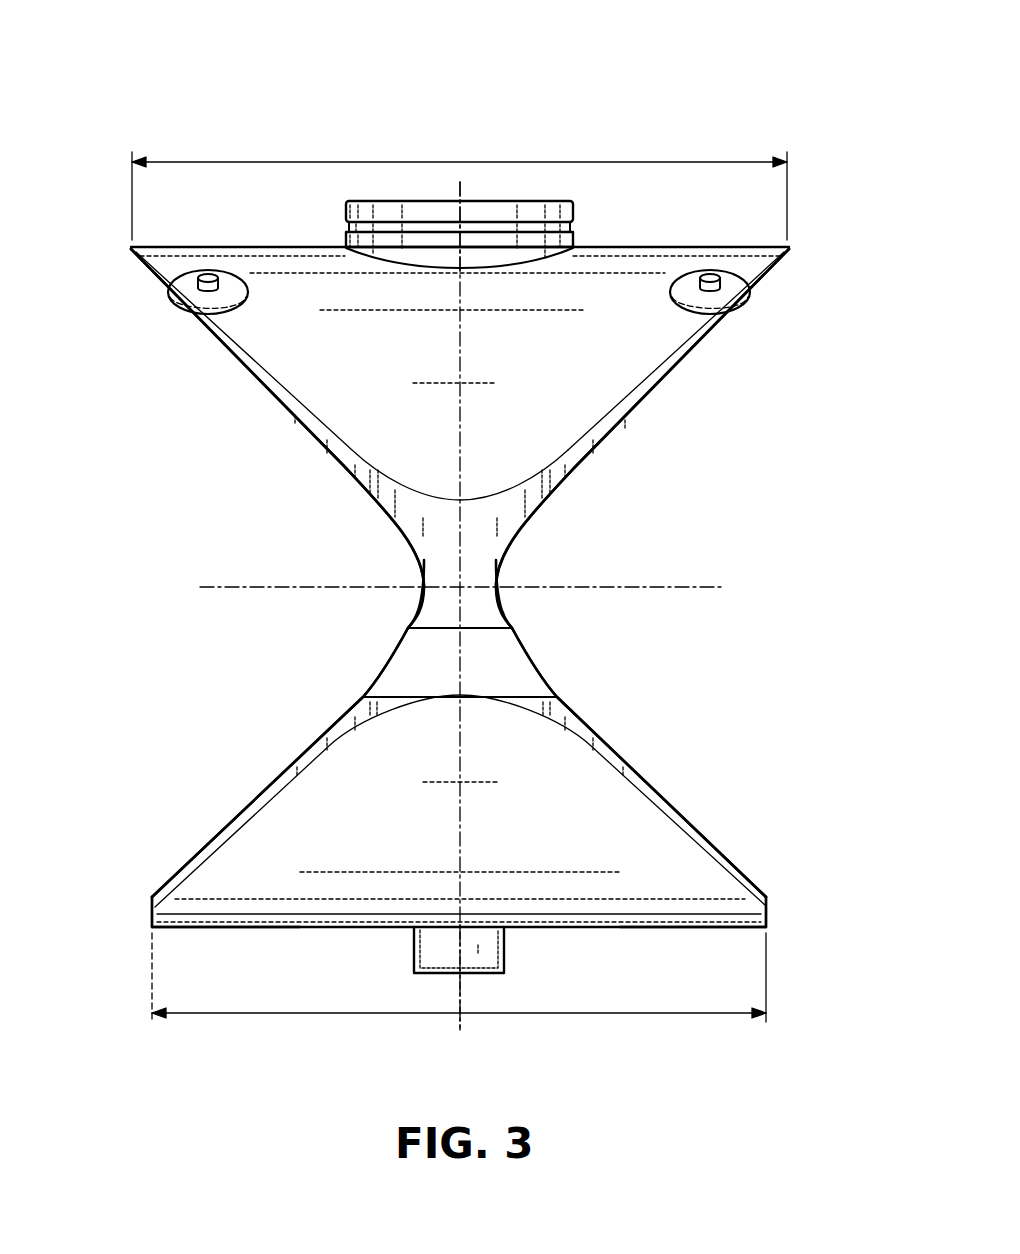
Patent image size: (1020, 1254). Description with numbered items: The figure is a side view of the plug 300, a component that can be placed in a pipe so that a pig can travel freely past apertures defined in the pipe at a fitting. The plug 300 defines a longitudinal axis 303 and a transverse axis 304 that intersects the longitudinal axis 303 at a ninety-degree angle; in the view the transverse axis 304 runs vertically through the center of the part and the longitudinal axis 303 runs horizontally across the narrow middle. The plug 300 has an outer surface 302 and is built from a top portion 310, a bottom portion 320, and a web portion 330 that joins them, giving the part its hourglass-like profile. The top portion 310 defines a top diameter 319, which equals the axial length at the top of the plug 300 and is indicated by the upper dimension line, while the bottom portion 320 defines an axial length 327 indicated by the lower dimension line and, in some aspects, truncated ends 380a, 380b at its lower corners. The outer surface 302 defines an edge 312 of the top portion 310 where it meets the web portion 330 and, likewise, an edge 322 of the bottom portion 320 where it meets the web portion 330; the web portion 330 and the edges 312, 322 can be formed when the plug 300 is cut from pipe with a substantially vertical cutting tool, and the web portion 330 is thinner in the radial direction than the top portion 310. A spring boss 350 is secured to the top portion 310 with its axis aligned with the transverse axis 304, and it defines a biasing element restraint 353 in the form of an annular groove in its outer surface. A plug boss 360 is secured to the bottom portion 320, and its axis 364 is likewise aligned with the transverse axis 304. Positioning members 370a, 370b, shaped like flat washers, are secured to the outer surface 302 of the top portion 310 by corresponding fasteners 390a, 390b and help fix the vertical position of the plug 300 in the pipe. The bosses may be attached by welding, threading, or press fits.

The plug 300 is at (662, 52).
The outer surface 302 is at (297, 368).
The longitudinal axis 303 is at (680, 589).
The transverse axis 304 is at (462, 188).
The top portion 310 is at (628, 362).
The edge of the top portion 312 is at (353, 451).
The top diameter 319 is at (556, 161).
The bottom portion 320 is at (640, 826).
The edge of the bottom portion 322 is at (300, 777).
The axial length 327 is at (481, 1014).
The web portion 330 is at (494, 553).
The spring boss 350 is at (420, 201).
The biasing element restraint 353 is at (348, 236).
The plug boss 360 is at (505, 948).
The axis of the plug boss 364 is at (458, 1025).
The positioning member 370a is at (718, 300).
The positioning member 370b is at (196, 299).
The truncated end 380a is at (766, 912).
The truncated end 380b is at (152, 911).
The fastener 390a is at (720, 284).
The fastener 390b is at (199, 284).